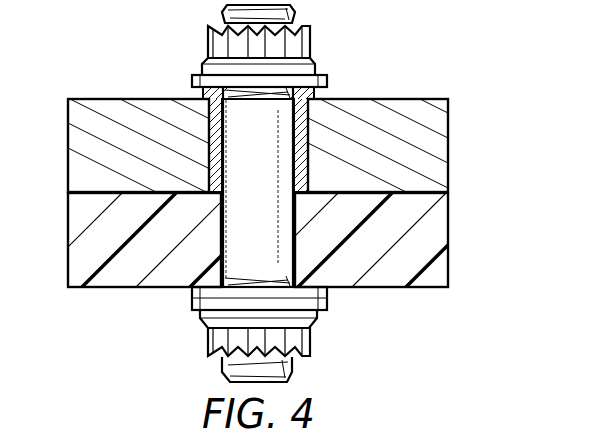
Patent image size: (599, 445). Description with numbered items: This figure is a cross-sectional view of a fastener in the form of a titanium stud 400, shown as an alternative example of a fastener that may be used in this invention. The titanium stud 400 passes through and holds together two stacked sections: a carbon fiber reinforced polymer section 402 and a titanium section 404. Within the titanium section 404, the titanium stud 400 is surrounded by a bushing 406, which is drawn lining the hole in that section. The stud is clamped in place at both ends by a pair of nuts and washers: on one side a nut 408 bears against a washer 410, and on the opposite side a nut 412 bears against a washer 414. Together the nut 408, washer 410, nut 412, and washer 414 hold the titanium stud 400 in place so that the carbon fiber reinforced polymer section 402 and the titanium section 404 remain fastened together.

The titanium stud 400 is at (272, 250).
The carbon fiber reinforced polymer section 402 is at (424, 288).
The titanium section 404 is at (431, 98).
The bushing 406 is at (202, 93).
The nut 408 is at (311, 45).
The washer 410 is at (328, 82).
The nut 412 is at (208, 341).
The washer 414 is at (192, 296).